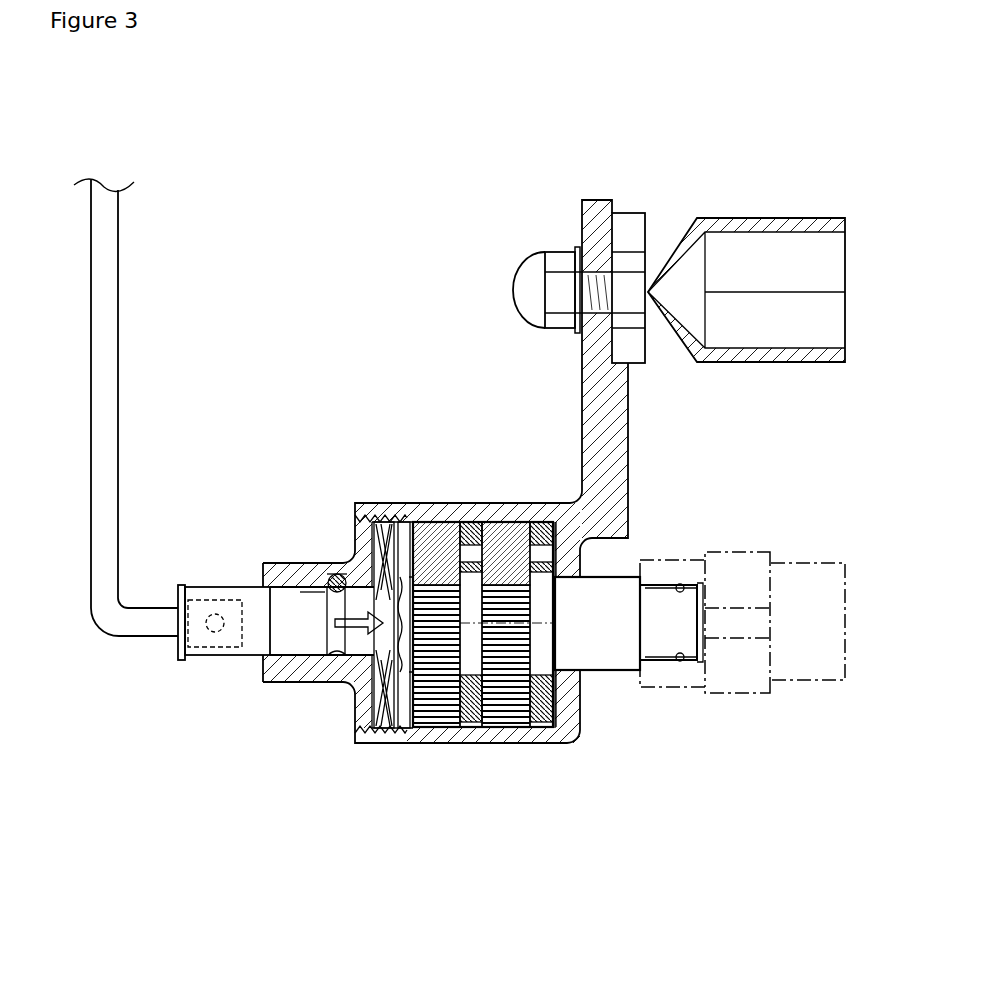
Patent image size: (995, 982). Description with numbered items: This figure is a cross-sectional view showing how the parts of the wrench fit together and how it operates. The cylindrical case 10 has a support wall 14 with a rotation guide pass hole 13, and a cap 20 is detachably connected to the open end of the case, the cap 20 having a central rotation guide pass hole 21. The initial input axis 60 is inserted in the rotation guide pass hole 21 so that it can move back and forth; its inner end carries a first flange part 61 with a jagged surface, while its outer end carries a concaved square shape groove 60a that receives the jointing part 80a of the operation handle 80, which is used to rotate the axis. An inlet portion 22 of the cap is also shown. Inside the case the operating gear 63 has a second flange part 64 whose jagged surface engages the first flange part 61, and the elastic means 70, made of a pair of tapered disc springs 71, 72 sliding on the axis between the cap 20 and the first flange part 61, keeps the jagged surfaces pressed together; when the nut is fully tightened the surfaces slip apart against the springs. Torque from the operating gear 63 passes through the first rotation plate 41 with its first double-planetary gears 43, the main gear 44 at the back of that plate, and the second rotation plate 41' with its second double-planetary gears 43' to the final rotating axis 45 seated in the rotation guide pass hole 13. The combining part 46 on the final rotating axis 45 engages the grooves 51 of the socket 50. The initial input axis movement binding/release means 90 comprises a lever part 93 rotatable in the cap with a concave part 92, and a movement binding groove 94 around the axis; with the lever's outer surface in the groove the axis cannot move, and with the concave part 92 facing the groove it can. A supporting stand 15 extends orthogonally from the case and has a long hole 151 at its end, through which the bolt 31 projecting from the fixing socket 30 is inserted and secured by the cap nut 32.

The cylindrical case 10 is at (393, 756).
The rotation guide pass hole 13 is at (573, 670).
The support wall 14 is at (565, 713).
The supporting stand 15 is at (597, 215).
The long hole 151 is at (624, 262).
The cap 20 is at (369, 504).
The rotation guide pass hole 21 is at (347, 577).
The inlet port 22 is at (293, 667).
The fixing socket 30 is at (788, 208).
The bolt 31 is at (594, 262).
The cap nut 32 is at (517, 275).
The first rotation plate 41 is at (491, 680).
The second rotation plate 41' is at (551, 673).
The first double-planetary gears 43 is at (436, 495).
The second double-planetary gears 43' is at (506, 495).
The main gear 44 is at (556, 655).
The final rotating axis 45 is at (617, 593).
The combining part 46 is at (668, 645).
The socket 50 is at (823, 548).
The grooves 51 is at (695, 655).
The initial input axis 60 is at (203, 580).
The concaved square shape groove 60a is at (233, 602).
The first flange part 61 is at (373, 733).
The operating gear 63 is at (427, 670).
The second flange part 64 is at (443, 642).
The elastic means 70 is at (365, 716).
The disc spring 71 is at (367, 525).
The disc spring 72 is at (388, 525).
The operation handle 80 is at (128, 316).
The jointing part 80a is at (200, 640).
The initial input axis movement binding/release means 90 is at (335, 574).
The concave part 92 is at (312, 597).
The lever part 93 is at (330, 572).
The movement binding groove 94 is at (331, 658).